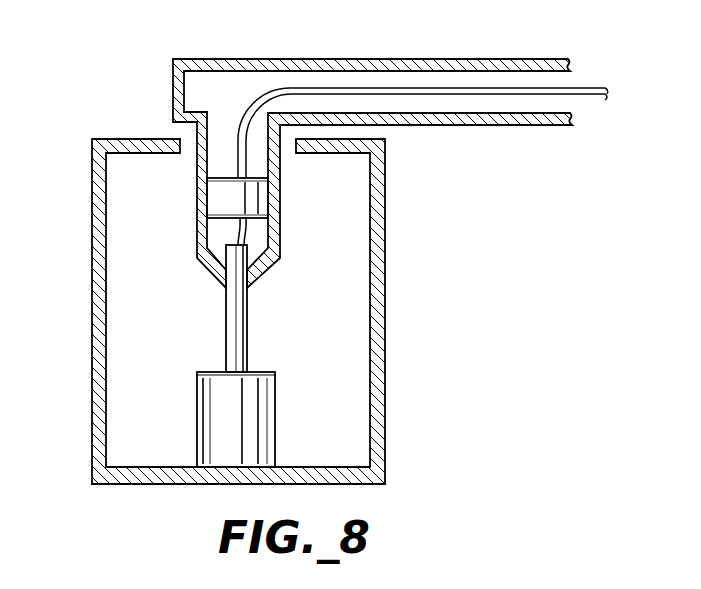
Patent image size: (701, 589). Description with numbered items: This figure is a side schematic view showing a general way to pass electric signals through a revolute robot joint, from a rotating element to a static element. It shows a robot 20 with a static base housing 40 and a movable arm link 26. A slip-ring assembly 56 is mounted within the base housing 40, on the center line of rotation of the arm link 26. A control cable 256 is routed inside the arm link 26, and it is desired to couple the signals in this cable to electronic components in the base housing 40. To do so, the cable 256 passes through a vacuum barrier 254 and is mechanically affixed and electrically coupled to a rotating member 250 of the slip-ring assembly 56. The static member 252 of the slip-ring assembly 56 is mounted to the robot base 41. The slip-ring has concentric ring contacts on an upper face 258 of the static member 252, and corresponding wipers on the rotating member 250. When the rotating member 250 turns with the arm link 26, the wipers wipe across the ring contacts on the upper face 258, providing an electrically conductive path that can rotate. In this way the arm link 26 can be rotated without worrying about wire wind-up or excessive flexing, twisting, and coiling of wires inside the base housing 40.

The arm link 26 is at (207, 59).
The control cable 256 is at (575, 100).
The vacuum barrier 254 is at (280, 194).
The rotating member 250 is at (248, 316).
The static member 252 is at (275, 427).
The base housing 40 is at (93, 207).
The robot base 41 is at (172, 485).
The upper face 258 is at (215, 372).
The robot 20 is at (91, 306).
The slip-ring assembly 56 is at (293, 356).